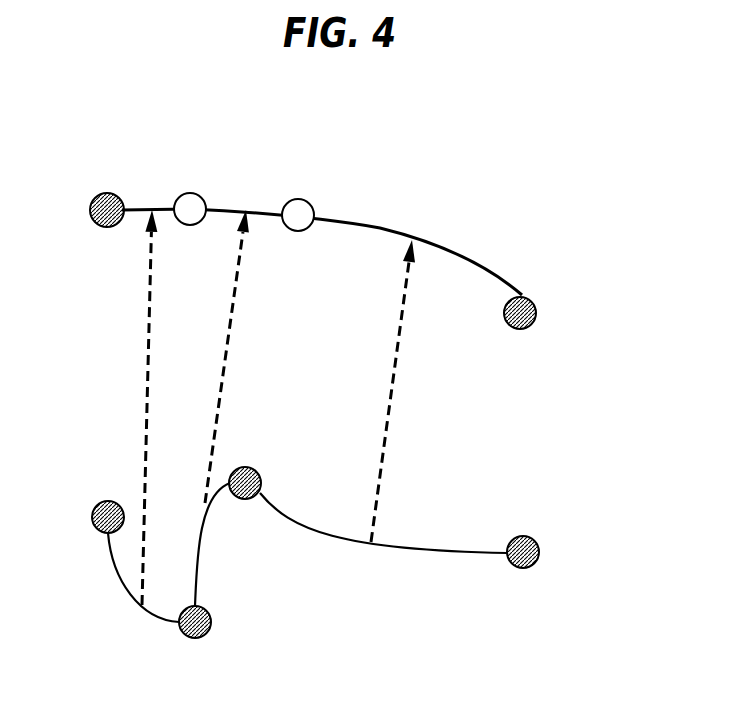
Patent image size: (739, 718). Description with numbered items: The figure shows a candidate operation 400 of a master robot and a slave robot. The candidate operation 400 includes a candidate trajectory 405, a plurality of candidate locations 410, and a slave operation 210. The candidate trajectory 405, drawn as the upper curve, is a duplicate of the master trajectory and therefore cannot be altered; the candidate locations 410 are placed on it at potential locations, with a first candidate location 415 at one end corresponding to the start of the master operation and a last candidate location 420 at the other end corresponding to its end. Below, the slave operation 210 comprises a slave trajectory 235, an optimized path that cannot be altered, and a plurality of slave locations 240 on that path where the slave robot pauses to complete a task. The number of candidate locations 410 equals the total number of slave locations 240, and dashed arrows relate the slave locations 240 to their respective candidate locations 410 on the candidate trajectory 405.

The slave operation 210 is at (355, 550).
The slave trajectory 235 is at (384, 548).
The slave locations 240 is at (106, 501).
The candidate operation 400 is at (197, 120).
The candidate trajectory 405 is at (440, 240).
The candidate locations 410 is at (201, 194).
The first candidate location 415 is at (97, 196).
The last candidate location 420 is at (532, 322).